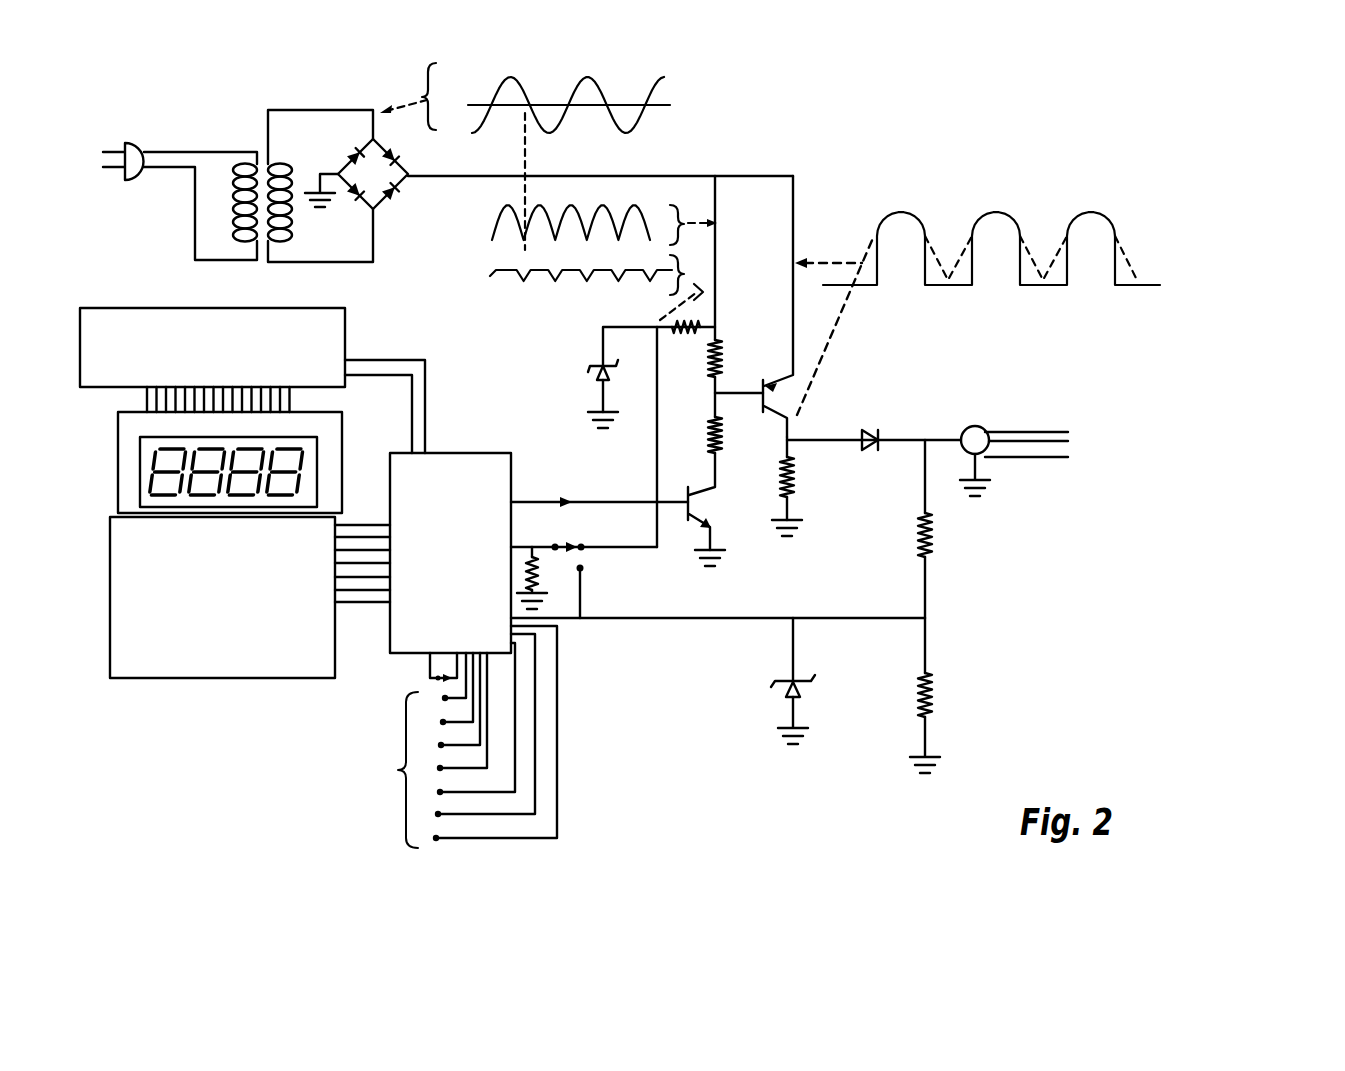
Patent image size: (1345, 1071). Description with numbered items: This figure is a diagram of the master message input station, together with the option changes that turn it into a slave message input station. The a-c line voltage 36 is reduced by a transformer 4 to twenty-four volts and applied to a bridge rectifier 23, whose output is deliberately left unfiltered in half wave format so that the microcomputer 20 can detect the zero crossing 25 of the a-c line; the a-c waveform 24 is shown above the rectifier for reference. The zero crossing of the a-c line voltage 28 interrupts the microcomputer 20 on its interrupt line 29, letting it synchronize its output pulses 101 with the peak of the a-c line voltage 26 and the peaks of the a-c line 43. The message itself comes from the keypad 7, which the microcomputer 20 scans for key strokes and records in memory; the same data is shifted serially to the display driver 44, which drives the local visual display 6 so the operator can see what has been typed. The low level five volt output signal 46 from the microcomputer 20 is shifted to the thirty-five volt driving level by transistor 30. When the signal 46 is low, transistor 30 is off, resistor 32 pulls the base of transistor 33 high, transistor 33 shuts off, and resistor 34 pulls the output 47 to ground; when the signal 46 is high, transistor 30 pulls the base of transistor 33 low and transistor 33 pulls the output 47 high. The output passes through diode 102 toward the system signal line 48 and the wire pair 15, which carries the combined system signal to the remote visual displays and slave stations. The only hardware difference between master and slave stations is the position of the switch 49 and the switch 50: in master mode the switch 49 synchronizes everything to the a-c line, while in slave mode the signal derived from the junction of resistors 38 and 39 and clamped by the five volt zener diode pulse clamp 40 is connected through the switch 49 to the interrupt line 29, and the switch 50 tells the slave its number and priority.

The transformer 4 is at (268, 262).
The local visual display 6 is at (118, 430).
The keypad 7 is at (110, 600).
The wire pair 15 is at (1048, 431).
The microcomputer 20 is at (470, 453).
The bridge rectifier 23 is at (380, 207).
The AC voltage waveform 24 is at (495, 85).
The zero crossing 25 is at (520, 264).
The peak of the a-c line voltage 26 is at (509, 205).
The zero crossing of the a-c line voltage 28 is at (620, 327).
The microcomputer interrupt line 29 is at (520, 546).
The transistor 30 is at (688, 490).
The resistor 32 is at (718, 352).
The transistor 33 is at (778, 383).
The resistor 34 is at (792, 465).
The a-c line voltage 36 is at (233, 150).
The resistor 38 is at (922, 540).
The resistor 39 is at (928, 700).
The zener diode pulse clamp 40 is at (778, 680).
The peaks of the a-c line 43 is at (873, 240).
The display driver 44 is at (145, 308).
The output signal 46 is at (637, 500).
The output 47 is at (840, 438).
The system signal line 48 is at (950, 438).
The switch 49 is at (560, 553).
The switch 50 is at (438, 840).
The output pulses 101 is at (918, 212).
The diode 102 is at (868, 447).